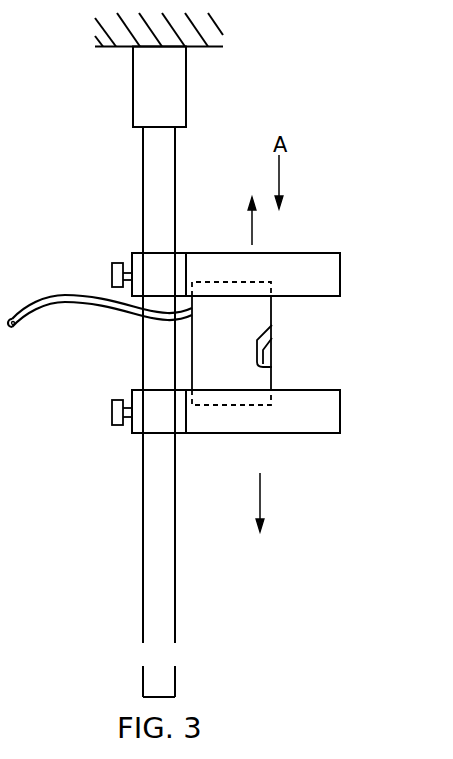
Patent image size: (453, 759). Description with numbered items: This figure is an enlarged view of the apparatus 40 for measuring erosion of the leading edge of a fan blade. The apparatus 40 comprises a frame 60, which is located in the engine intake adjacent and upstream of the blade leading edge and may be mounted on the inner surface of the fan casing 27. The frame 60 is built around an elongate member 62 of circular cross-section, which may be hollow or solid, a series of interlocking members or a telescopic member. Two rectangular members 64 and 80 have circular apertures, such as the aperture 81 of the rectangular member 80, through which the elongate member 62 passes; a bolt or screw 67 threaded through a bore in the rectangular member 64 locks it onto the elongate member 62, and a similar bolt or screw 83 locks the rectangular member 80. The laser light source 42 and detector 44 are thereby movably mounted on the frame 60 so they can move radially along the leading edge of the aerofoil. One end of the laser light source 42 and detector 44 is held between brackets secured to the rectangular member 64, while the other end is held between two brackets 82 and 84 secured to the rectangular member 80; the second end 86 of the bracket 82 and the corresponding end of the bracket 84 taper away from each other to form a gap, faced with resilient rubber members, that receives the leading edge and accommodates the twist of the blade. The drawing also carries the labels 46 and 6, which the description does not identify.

The fan casing 27 is at (213, 27).
The apparatus 40 is at (104, 198).
The hose 46 is at (68, 293).
The laser light source 42 is at (212, 340).
The detector 44 is at (212, 367).
The frame 60 is at (158, 523).
The elongate member 62 is at (160, 495).
The rectangular member 64 is at (180, 257).
The bolt, or screw 67 is at (110, 268).
The rectangular member 80 is at (132, 424).
The circular aperture 81 is at (172, 430).
The bracket 82 is at (290, 425).
The bracket 84 is at (263, 411).
The bolt, or screw 83 is at (108, 410).
The second end of bracket 86 is at (342, 407).
The partial numeral 6 is at (450, 338).